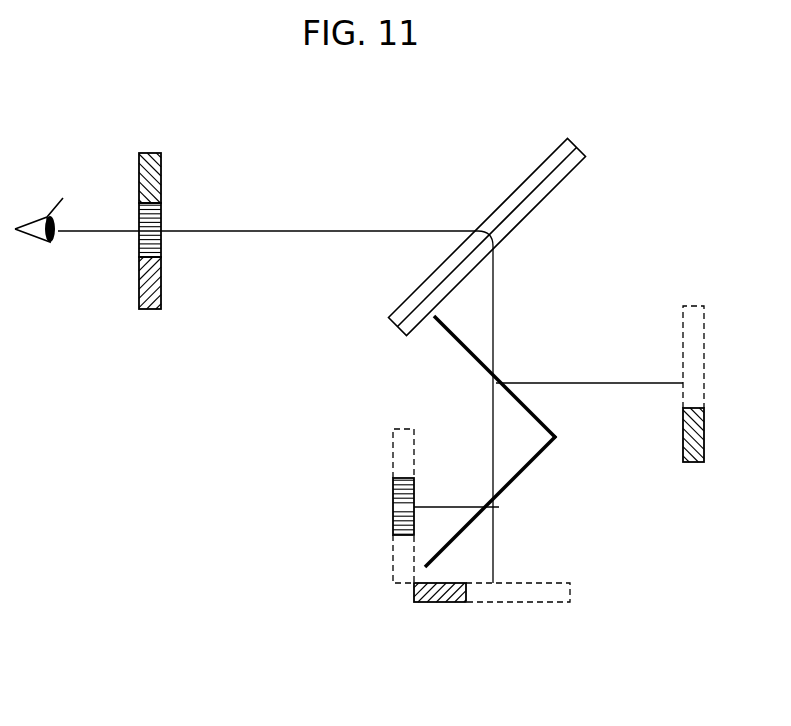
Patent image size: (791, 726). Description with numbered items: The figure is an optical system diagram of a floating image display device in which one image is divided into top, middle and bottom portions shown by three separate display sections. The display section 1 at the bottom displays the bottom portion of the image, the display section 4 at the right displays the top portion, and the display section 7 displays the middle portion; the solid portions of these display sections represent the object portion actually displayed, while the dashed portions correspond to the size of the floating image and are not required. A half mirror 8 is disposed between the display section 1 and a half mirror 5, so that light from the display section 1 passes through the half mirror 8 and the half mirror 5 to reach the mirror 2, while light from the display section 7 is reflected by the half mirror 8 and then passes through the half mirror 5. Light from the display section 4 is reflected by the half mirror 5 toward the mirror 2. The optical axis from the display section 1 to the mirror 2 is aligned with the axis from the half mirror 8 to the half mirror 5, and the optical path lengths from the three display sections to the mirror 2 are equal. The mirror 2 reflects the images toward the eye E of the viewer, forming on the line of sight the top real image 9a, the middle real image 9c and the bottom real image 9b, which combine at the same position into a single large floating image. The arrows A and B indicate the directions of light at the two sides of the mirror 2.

The display section 1 is at (433, 602).
The mirror 2 is at (553, 152).
The display section 4 is at (683, 435).
The half mirror 5 is at (460, 345).
The display section 7 is at (393, 502).
The half mirror 8 is at (522, 475).
The top real image 9a is at (161, 168).
The bottom real image 9b is at (161, 283).
The middle real image 9c is at (161, 210).
The light incident direction A is at (391, 327).
The light incident direction B is at (589, 143).
The eye E is at (43, 213).